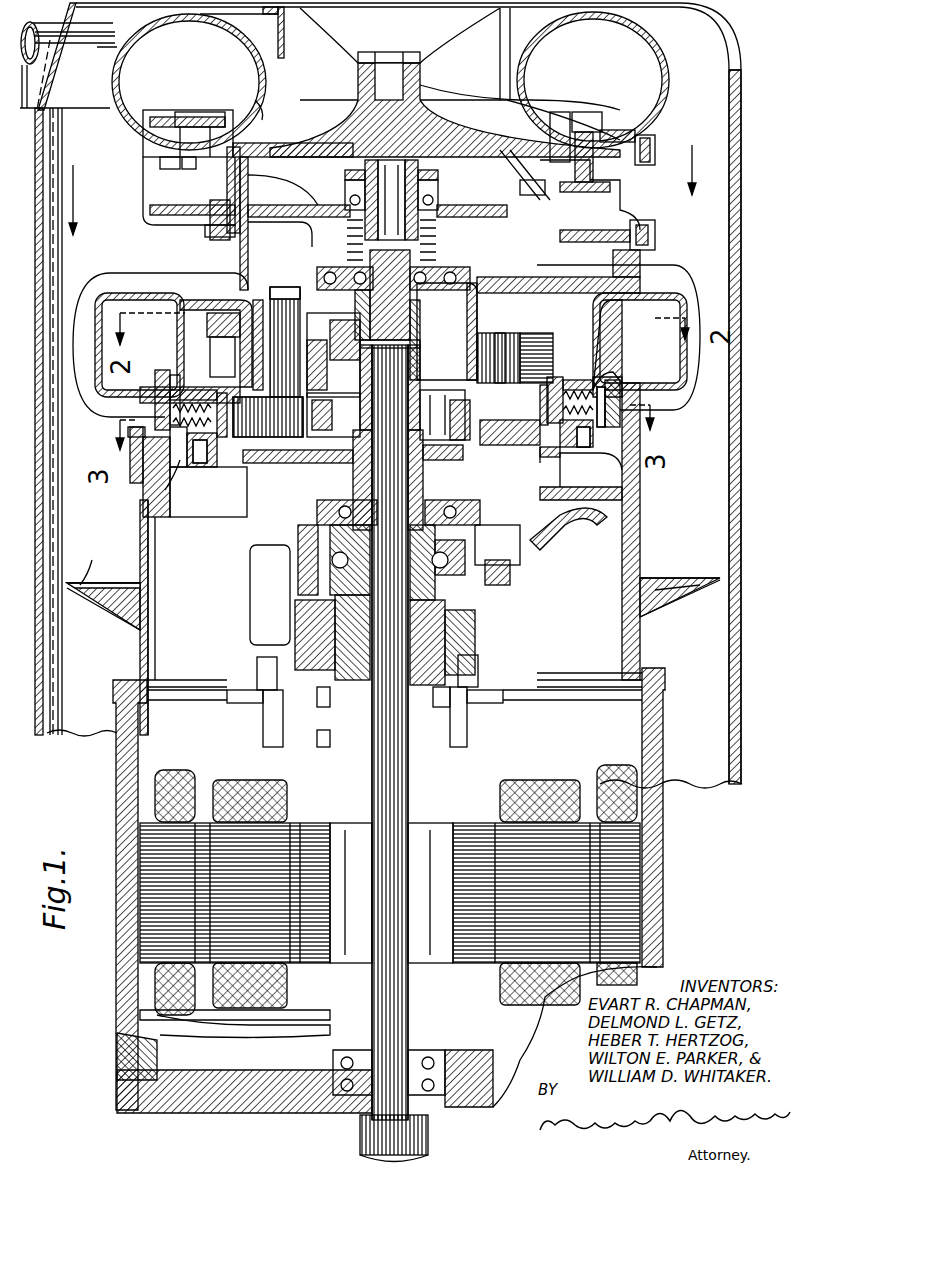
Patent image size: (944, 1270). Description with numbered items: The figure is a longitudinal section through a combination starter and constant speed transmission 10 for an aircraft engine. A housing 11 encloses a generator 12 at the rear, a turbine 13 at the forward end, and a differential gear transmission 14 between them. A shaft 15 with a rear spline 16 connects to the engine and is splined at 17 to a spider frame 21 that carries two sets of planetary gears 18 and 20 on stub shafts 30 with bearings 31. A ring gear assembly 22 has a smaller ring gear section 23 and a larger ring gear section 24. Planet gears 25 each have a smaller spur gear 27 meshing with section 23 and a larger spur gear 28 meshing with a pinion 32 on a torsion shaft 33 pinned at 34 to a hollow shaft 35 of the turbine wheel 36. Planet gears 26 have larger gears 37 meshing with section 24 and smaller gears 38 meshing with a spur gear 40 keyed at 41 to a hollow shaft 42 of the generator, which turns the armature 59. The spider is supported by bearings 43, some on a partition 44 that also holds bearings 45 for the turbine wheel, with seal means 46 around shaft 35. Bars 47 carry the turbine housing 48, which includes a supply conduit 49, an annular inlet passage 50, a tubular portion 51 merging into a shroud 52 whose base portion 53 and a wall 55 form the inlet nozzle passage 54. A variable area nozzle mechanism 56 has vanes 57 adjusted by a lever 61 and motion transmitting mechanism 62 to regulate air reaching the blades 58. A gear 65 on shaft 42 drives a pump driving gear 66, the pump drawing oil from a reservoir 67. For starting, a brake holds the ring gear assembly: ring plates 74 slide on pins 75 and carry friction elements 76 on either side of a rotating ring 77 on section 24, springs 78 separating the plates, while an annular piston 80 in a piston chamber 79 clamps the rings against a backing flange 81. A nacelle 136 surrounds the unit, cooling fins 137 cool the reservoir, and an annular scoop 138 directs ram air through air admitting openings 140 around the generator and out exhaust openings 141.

The combination starter and constant speed transmission 10 is at (108, 503).
The housing 11 is at (660, 712).
The generator 12 is at (190, 790).
The turbine 13 is at (435, 75).
The transmission 14 is at (225, 298).
The shaft 15 is at (375, 910).
The spline 16 is at (350, 1142).
The spline 17 is at (428, 360).
The planetary gears 18 is at (235, 325).
The planetary gears 20 is at (565, 465).
The spider frame 21 is at (455, 398).
The ring gear assembly 22 is at (214, 400).
The ring gear section 23 is at (552, 378).
The ring gear section 24 is at (570, 380).
The planet gears 25 is at (345, 345).
The planet gears 26 is at (525, 318).
The spur gear 27 is at (328, 355).
The spur gear 28 is at (232, 300).
The stub shafts 30 is at (281, 292).
The bearings 31 is at (262, 300).
The pinion 32 is at (428, 310).
The torsion shaft 33 is at (398, 305).
The pin 34 is at (390, 295).
The hollow shaft 35 is at (380, 205).
The turbine wheel 36 is at (348, 75).
The larger gears 37 is at (553, 395).
The smaller gears 38 is at (548, 465).
The spur gear 40 is at (322, 415).
The key 41 is at (372, 458).
The hollow shaft 42 is at (345, 620).
The bearings 43 is at (322, 275).
The partition 44 is at (270, 180).
The bearings 45 is at (350, 205).
The seal means 46 is at (345, 88).
The bars 47 is at (227, 205).
The turbine housing 48 is at (186, 168).
The supply conduit 49 is at (88, 95).
The inlet passage 50 is at (174, 48).
The tubular portion 51 is at (278, 22).
The shroud 52 is at (260, 100).
The base portion 53 is at (192, 120).
The inlet nozzle passage 54 is at (160, 128).
The wall 55 is at (158, 168).
The variable area nozzle mechanism 56 is at (590, 118).
The vanes 57 is at (565, 118).
The blades 58 is at (488, 113).
The armature 59 is at (310, 968).
The lever 61 is at (612, 225).
The motion transmitting mechanism 62 is at (645, 165).
The gear 65 is at (315, 515).
The pump driving gear 66 is at (598, 475).
The reservoir 67 is at (646, 330).
The ring plates 74 is at (142, 425).
The pins 75 is at (600, 387).
The friction elements 76 is at (198, 395).
The rotating ring 77 is at (224, 437).
The springs 78 is at (612, 355).
The annular piston chamber 79 is at (200, 468).
The annular piston 80 is at (180, 468).
The backing flange 81 is at (190, 390).
The nacelle 136 is at (738, 776).
The cooling fins 137 is at (685, 252).
The annular scoop 138 is at (675, 578).
The air admitting openings 140 is at (155, 560).
The exhaust openings 141 is at (112, 1055).